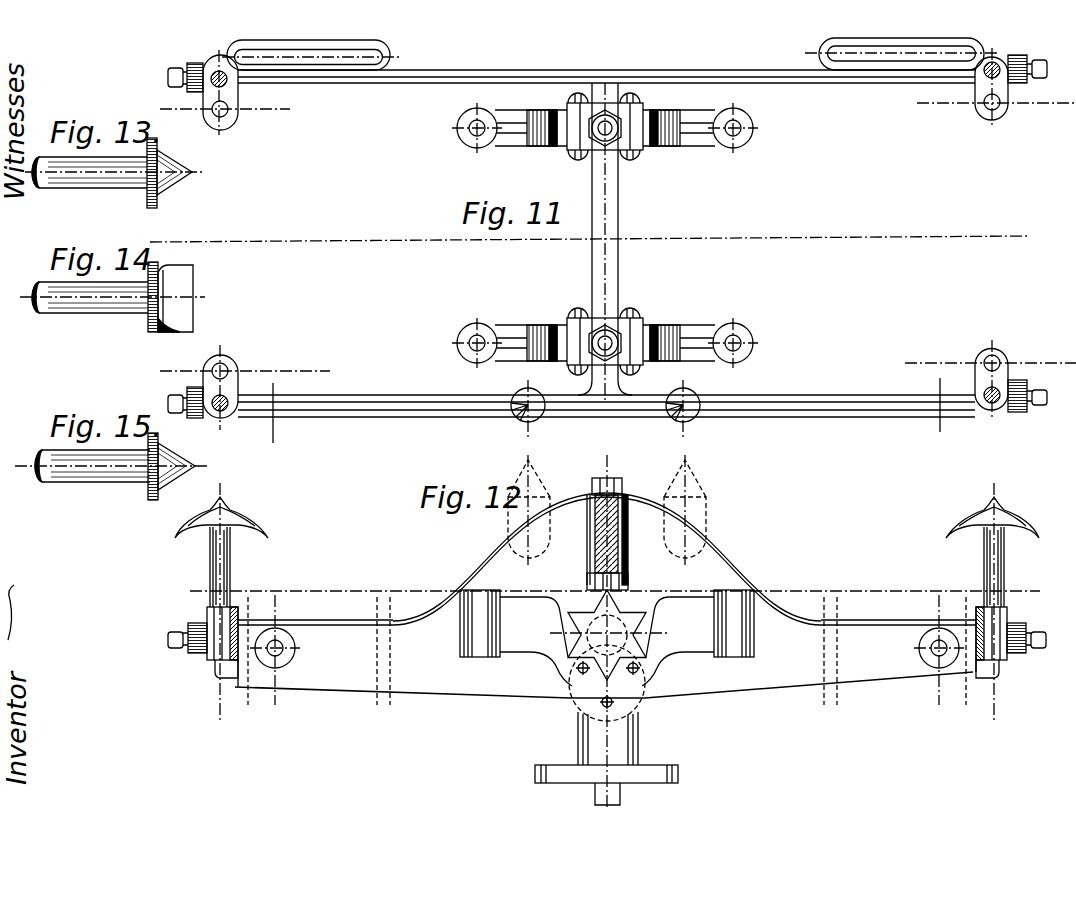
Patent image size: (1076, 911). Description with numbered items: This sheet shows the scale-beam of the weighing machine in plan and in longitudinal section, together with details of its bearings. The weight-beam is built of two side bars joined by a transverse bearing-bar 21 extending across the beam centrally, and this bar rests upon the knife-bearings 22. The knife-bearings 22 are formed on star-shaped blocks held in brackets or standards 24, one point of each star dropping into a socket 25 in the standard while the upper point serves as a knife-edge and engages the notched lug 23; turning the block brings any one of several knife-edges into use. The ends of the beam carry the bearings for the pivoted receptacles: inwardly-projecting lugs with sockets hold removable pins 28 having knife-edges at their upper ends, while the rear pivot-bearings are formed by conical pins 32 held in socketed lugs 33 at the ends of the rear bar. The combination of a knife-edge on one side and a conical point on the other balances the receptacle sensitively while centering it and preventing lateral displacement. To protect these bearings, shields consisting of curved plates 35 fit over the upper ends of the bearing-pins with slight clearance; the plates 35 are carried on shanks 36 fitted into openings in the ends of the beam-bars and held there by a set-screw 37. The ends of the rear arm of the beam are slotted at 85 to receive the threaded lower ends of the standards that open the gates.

In FIG. 11, the transverse bearing-bar 21 is at (611, 233).
In FIG. 12, the transverse bearing-bar 21 is at (628, 557).
In FIG. 11, the knife-bearings 22 is at (637, 134).
In FIG. 12, the knife-bearings 22 is at (608, 635).
In FIG. 12, the notched lug 23 is at (588, 586).
In FIG. 11, the brackets or standards 24 is at (677, 333).
In FIG. 12, the brackets or standards 24 is at (560, 667).
In FIG. 12, the socket 25 is at (603, 663).
In FIG. 14, the removable pins 28 is at (185, 293).
In FIG. 12, the conical pins 32 is at (213, 607).
In FIG. 11, the socketed lugs 33 is at (230, 115).
In FIG. 12, the plates 35 is at (257, 528).
In FIG. 12, the shanks 36 is at (230, 575).
In FIG. 12, the set-screw 37 is at (184, 650).
In FIG. 11, the slots 85 is at (319, 36).